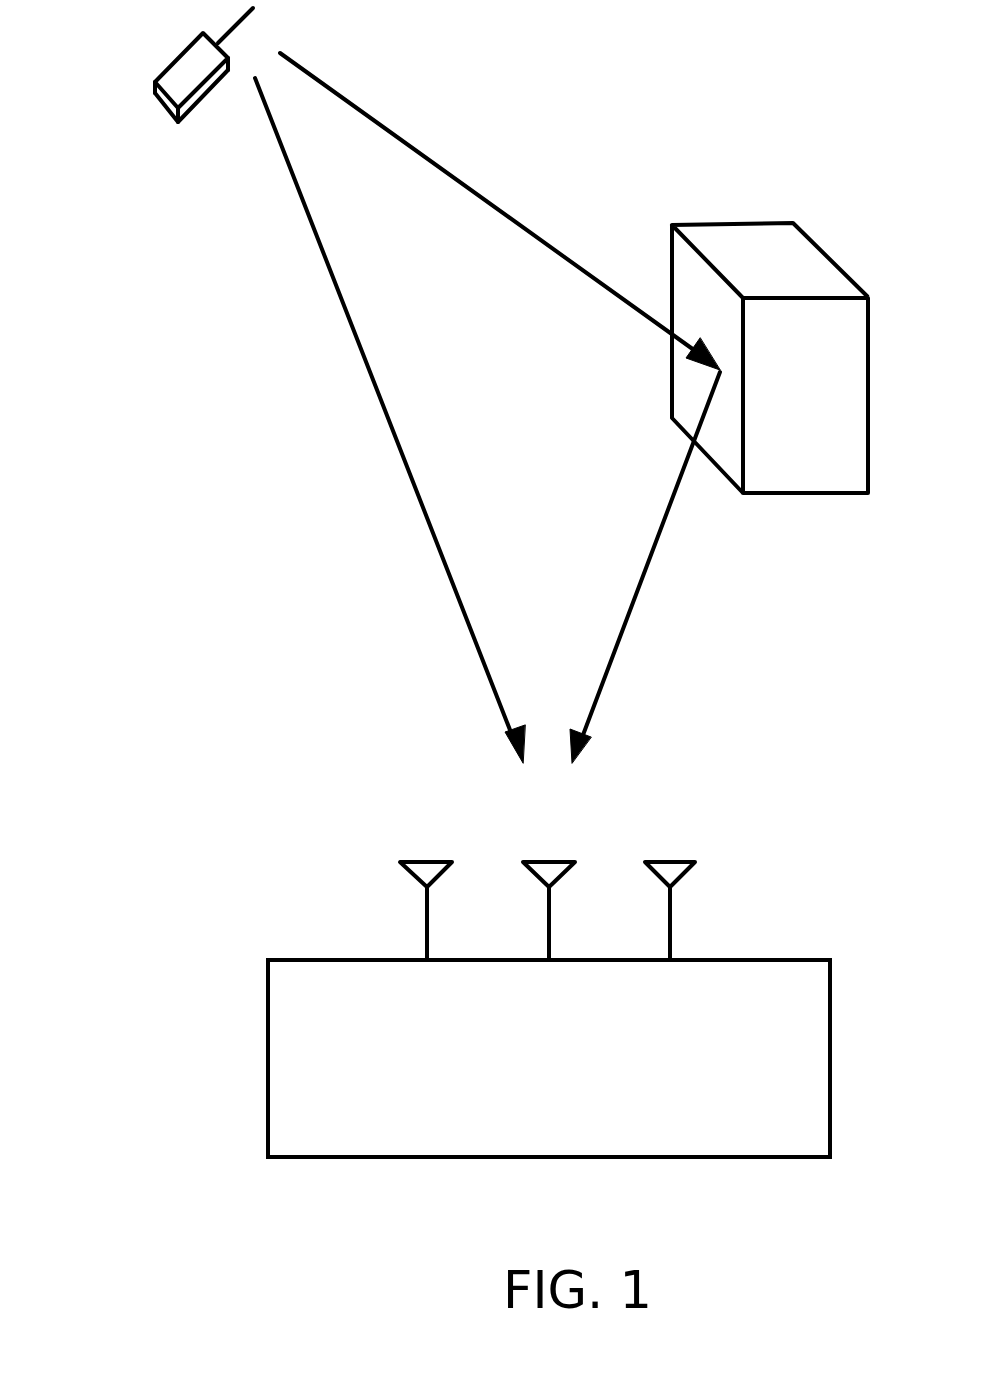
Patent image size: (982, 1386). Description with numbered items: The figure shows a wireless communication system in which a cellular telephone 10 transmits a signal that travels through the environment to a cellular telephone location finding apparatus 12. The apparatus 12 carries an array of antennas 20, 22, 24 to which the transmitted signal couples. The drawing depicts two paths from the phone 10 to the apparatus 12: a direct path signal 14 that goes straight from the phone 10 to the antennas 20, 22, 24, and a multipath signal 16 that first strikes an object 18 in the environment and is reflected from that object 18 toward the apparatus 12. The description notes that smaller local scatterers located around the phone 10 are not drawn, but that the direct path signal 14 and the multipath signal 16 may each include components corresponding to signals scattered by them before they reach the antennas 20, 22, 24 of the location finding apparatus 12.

The cellular telephone 10 is at (157, 100).
The cellular telephone location finding apparatus 12 is at (562, 1158).
The direct path signal 14 is at (400, 453).
The multipath signal 16 is at (547, 250).
The object 18 is at (820, 497).
The antenna 20 is at (445, 868).
The antenna 22 is at (567, 868).
The antenna 24 is at (688, 868).